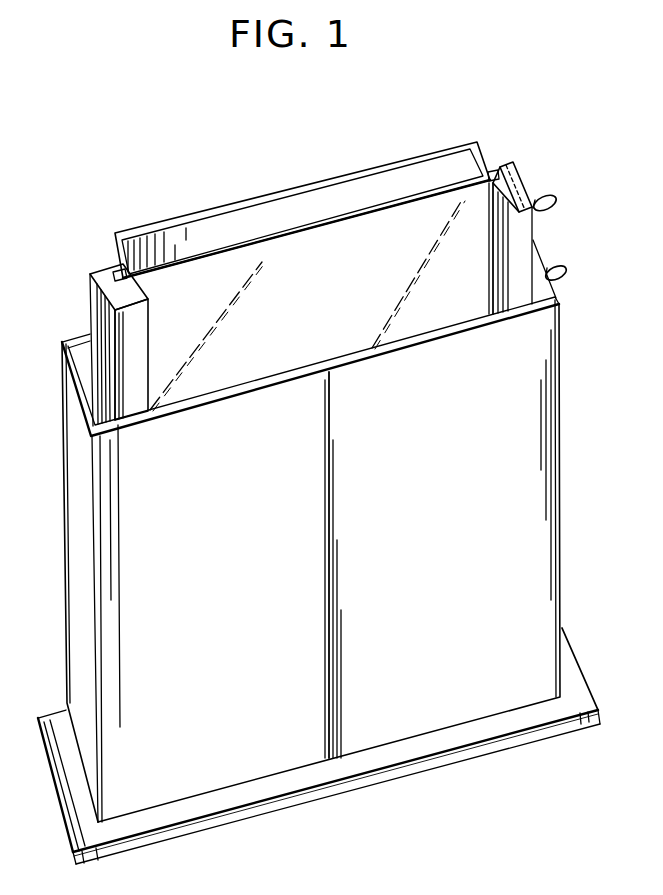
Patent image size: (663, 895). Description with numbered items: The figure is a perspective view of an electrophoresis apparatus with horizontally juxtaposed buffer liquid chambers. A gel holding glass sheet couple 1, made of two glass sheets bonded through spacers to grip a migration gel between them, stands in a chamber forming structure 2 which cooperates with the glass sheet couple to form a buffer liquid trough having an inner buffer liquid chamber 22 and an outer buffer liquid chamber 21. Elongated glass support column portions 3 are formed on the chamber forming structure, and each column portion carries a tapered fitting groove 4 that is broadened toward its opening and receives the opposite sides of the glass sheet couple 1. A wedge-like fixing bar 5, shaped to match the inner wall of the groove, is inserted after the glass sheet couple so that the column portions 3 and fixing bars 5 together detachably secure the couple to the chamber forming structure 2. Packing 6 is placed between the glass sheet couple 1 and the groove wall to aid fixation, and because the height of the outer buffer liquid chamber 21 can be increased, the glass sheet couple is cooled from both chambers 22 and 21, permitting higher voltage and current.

The gel holding glass sheet couple 1 is at (337, 243).
The chamber forming structure 2 is at (466, 140).
The outer buffer liquid chamber 21 is at (230, 233).
The inner buffer liquid chamber 22 is at (83, 362).
The glass support column portion 3 is at (100, 274).
The tapered fitting groove 4 is at (98, 292).
The wedge-like fixing bar 5 is at (504, 197).
The packing 6 is at (116, 270).